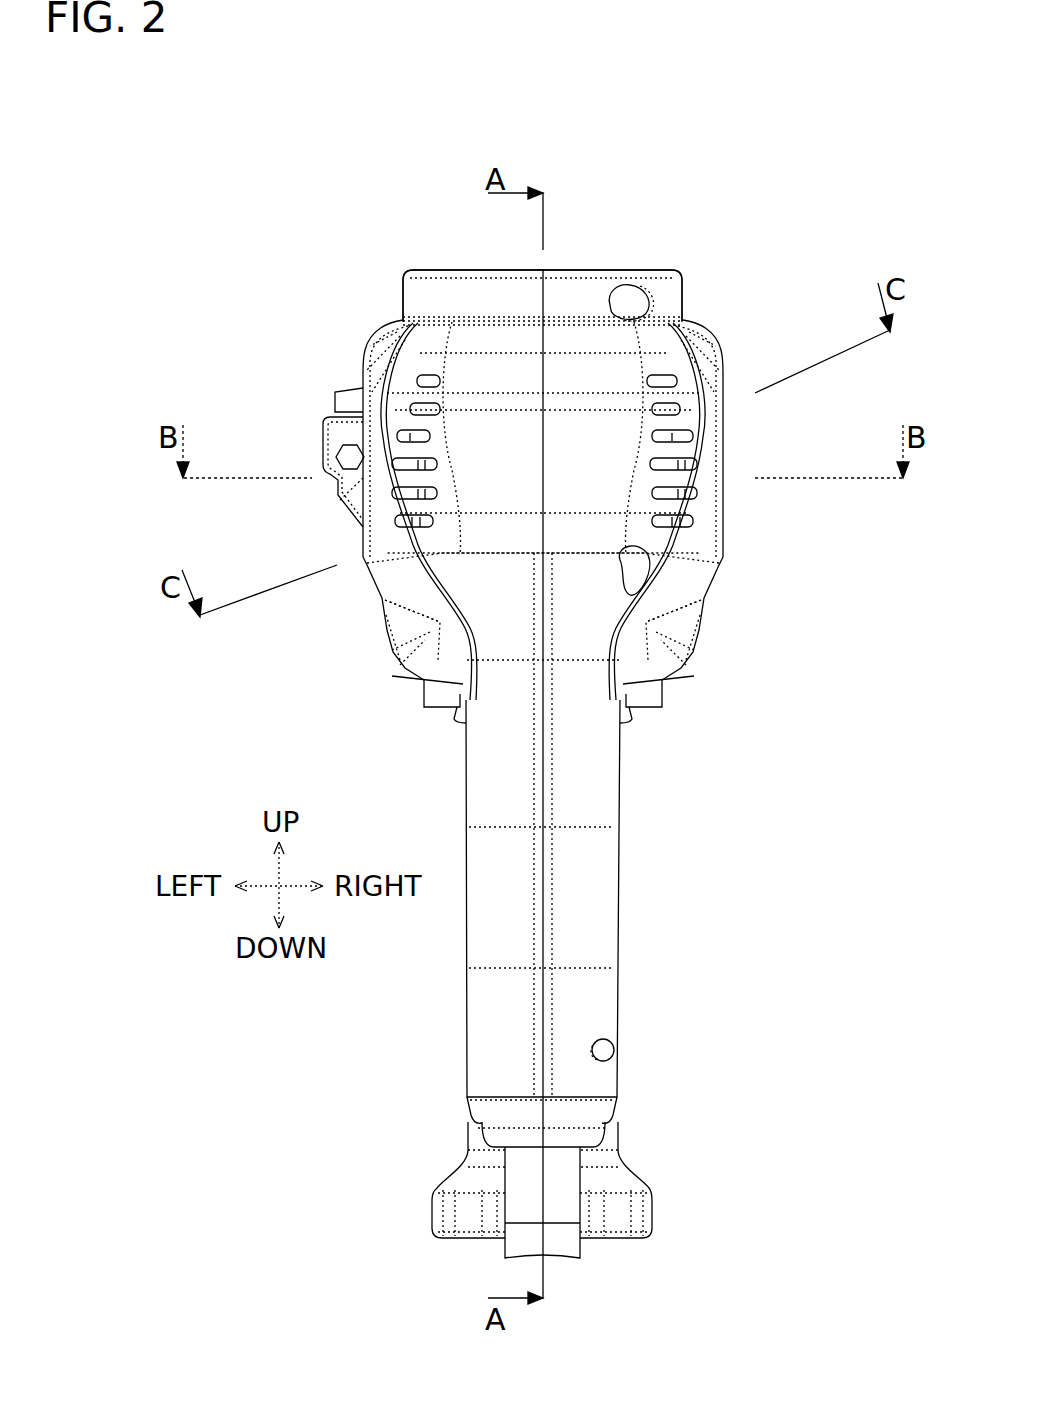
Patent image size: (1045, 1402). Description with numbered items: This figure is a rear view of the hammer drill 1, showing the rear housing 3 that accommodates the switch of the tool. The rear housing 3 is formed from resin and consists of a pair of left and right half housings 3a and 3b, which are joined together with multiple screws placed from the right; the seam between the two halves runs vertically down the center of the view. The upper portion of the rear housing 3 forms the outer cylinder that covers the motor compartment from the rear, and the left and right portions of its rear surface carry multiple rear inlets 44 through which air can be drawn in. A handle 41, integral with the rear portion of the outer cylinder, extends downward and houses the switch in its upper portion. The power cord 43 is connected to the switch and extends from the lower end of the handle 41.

The hammer drill 1 is at (692, 203).
The rear housing 3 is at (593, 260).
The left half housing 3a is at (413, 299).
The right half housing 3b is at (668, 299).
The rear inlets 44 is at (398, 396).
The handle 41 is at (484, 927).
The power cord 43 is at (618, 1245).